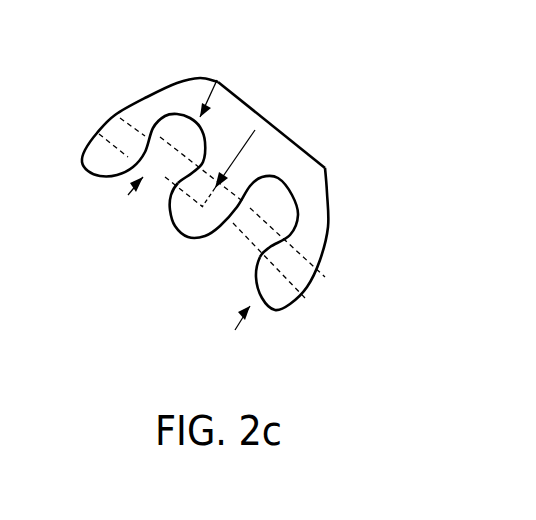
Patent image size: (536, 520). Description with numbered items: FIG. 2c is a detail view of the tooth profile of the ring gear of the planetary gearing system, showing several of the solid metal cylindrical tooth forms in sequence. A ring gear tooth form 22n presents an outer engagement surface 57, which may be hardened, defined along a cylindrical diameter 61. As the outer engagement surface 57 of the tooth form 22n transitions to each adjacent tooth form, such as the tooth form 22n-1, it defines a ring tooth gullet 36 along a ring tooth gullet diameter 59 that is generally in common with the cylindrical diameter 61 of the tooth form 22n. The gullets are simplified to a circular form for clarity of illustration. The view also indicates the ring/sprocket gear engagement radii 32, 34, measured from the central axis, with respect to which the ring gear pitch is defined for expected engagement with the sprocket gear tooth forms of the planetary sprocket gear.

The adjacent ring gear tooth form 22n-1 is at (187, 90).
The ring gear tooth form 22n is at (222, 185).
The ring/sprocket gear engagement radius 32 is at (95, 135).
The ring/sprocket gear engagement radius 34 is at (115, 115).
The ring tooth gullet 36 is at (128, 195).
The outer engagement surface 57 is at (235, 330).
The ring tooth gullet diameter 59 is at (217, 80).
The cylindrical diameter 61 is at (255, 130).